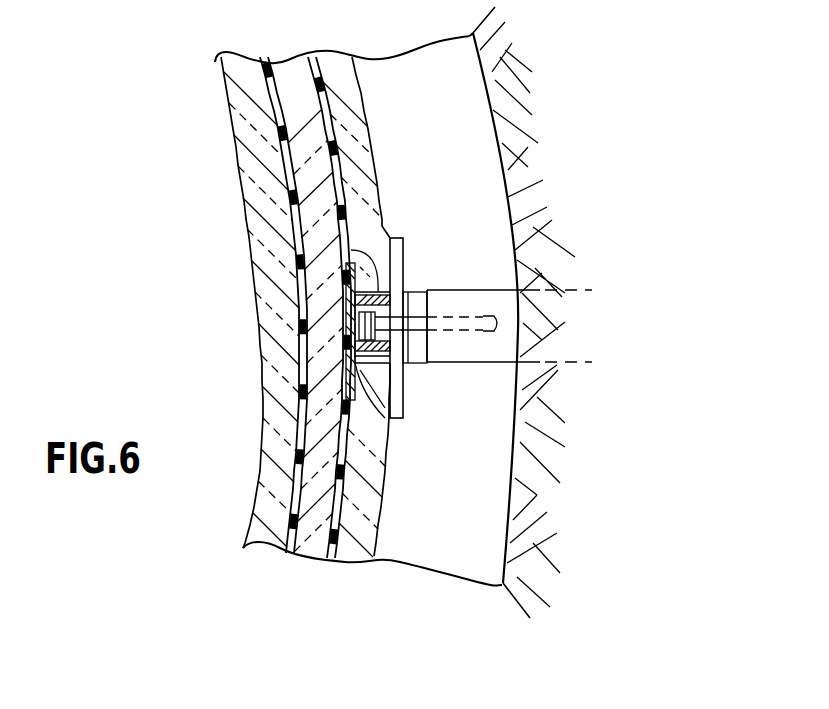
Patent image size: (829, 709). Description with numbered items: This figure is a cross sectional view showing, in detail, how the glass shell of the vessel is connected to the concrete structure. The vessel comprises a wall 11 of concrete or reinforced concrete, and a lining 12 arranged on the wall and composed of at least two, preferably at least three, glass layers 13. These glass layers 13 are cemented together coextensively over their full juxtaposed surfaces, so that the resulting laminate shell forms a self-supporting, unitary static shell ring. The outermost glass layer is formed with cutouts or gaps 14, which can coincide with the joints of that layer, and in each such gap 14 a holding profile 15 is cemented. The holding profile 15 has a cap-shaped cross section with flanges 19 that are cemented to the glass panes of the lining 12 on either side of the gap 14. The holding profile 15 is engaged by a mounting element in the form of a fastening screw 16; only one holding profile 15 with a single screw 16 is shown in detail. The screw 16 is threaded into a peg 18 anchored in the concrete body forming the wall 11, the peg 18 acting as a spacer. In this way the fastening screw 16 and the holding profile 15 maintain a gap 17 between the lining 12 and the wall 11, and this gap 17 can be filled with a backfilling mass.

The wall 11 is at (512, 168).
The lining 12 is at (397, 124).
The glass layers 13 is at (318, 85).
The gaps 14 is at (346, 239).
The holding profile 15 is at (345, 390).
The fastening screw 16 is at (405, 330).
The gap 17 is at (493, 245).
The pegs 18 is at (486, 350).
The flanges 19 is at (346, 270).